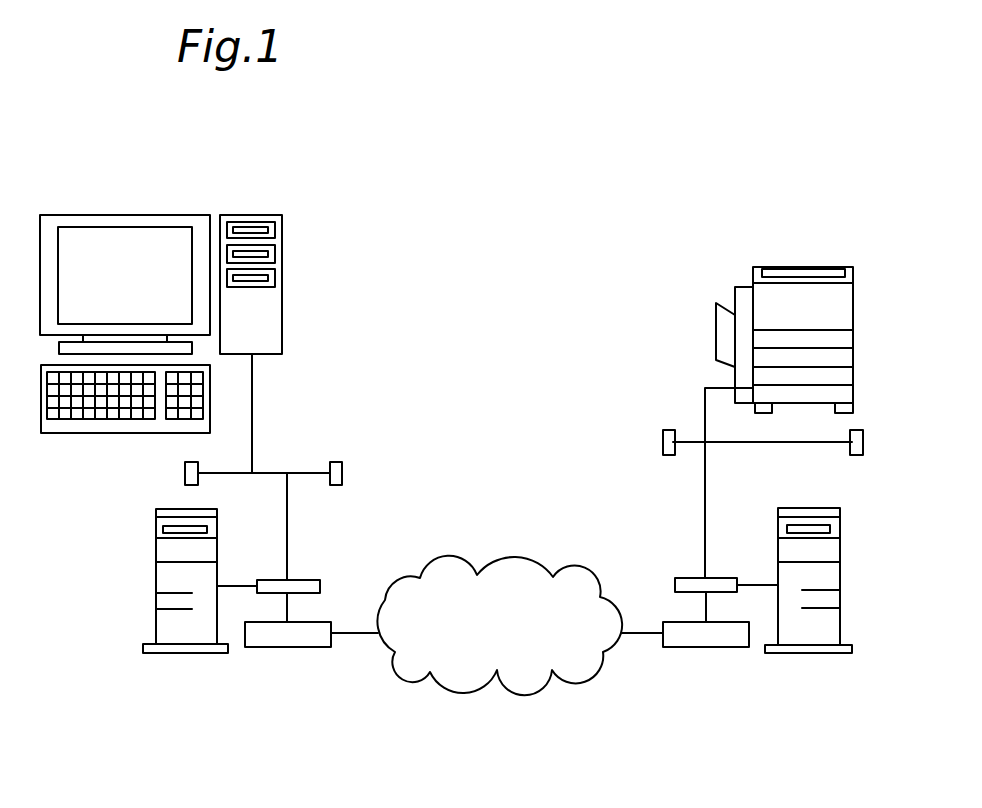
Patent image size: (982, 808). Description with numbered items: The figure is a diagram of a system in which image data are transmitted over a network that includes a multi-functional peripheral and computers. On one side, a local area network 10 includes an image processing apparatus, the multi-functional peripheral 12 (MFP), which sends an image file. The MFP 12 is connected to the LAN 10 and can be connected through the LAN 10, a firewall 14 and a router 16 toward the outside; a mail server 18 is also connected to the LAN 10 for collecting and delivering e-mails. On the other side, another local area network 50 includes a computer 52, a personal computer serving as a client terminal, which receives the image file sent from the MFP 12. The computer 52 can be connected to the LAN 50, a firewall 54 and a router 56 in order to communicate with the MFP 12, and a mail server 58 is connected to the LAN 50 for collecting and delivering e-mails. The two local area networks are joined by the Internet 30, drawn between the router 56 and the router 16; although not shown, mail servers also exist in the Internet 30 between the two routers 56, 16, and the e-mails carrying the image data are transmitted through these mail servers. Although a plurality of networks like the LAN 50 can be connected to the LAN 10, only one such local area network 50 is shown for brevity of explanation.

The local area network 10 is at (749, 442).
The multi-functional peripheral 12 is at (853, 347).
The firewall 14 is at (690, 578).
The router 16 is at (693, 647).
The mail server 18 is at (840, 578).
The Internet 30 is at (512, 555).
The local area network 50 is at (303, 473).
The computer 52 is at (254, 214).
The firewall 54 is at (310, 580).
The router 56 is at (303, 647).
The mail server 58 is at (156, 557).